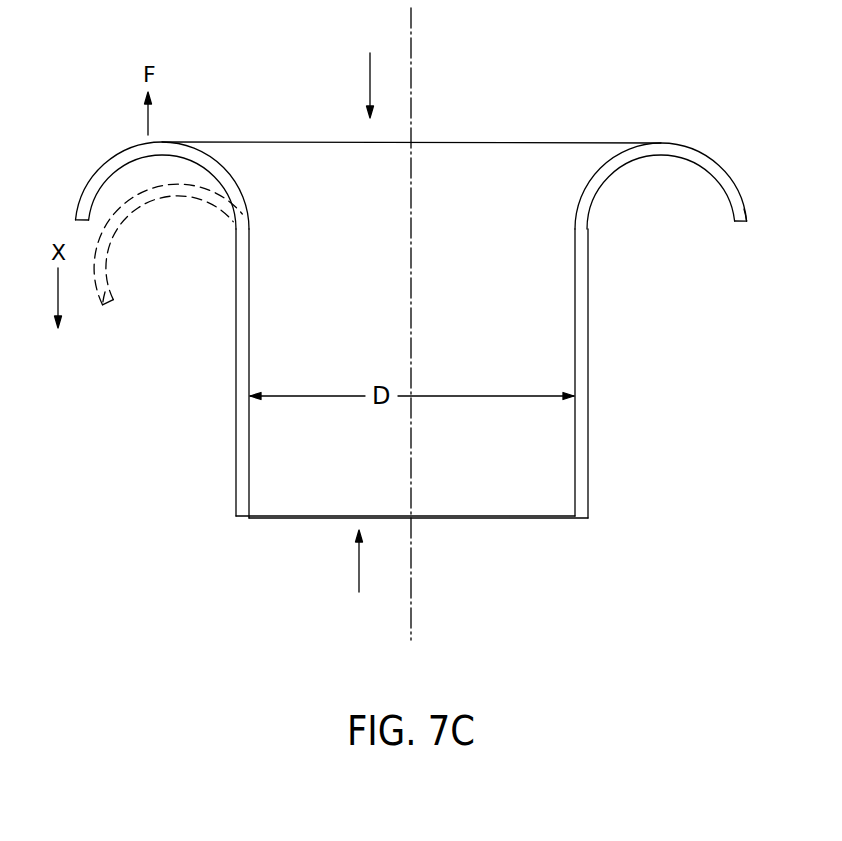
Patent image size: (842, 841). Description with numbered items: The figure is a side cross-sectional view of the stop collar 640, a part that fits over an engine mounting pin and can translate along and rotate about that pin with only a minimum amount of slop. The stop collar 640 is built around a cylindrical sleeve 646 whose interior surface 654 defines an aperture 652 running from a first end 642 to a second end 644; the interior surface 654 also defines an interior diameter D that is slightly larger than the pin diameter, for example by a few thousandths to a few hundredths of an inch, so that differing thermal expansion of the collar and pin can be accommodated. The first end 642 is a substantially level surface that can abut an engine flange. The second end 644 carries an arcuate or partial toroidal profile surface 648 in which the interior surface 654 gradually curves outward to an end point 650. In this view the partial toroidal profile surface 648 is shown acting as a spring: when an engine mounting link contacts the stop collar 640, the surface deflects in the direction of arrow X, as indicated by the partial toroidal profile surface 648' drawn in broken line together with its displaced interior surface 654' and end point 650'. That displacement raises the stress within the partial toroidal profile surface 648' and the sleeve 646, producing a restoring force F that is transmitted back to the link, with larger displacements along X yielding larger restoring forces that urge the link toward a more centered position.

The stop collar 640 is at (455, 322).
The first end 642 is at (362, 577).
The second end 644 is at (371, 69).
The cylindrical sleeve 646 is at (589, 410).
The partial toroidal profile surface 648 is at (451, 177).
The partial toroidal profile surface (deflected) 648' is at (168, 232).
The end point 650 is at (784, 243).
The end point (deflected) 650' is at (114, 345).
The aperture 652 is at (467, 477).
The interior surface 654 is at (645, 374).
The interior surface (deflected) 654' is at (169, 248).